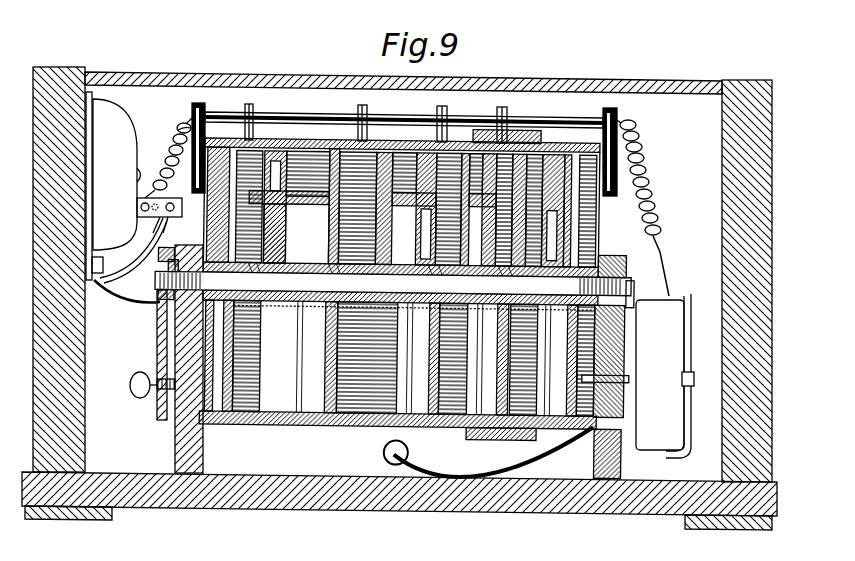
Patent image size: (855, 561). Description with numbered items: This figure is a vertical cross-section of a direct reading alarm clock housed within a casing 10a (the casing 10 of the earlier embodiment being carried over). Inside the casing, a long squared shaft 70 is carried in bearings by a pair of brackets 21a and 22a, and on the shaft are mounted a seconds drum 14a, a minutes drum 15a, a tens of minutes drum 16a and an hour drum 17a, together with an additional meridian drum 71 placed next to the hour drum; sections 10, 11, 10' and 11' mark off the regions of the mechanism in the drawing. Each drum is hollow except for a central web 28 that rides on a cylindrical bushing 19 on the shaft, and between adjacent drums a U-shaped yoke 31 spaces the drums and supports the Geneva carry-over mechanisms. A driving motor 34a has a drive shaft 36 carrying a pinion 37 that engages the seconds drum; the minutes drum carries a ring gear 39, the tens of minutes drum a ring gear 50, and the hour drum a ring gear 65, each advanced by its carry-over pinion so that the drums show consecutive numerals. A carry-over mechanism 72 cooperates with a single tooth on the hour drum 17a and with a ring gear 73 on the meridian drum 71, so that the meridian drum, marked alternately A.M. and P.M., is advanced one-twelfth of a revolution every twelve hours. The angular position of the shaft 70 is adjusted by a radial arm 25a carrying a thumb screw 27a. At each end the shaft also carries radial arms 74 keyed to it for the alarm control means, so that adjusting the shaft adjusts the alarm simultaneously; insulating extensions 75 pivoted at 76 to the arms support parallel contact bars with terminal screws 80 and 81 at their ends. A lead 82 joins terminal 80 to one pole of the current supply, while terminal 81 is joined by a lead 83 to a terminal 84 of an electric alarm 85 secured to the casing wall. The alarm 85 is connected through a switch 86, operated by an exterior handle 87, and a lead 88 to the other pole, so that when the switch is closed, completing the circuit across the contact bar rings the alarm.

The casing 10a is at (265, 78).
The casing 10 is at (404, 116).
The second section 11 is at (572, 100).
The first section lower 10' is at (284, 445).
The second section lower 11' is at (514, 454).
The seconds drum 14a is at (493, 452).
The minutes drum 15a is at (486, 438).
The tens of minutes drum 16a is at (437, 426).
The hour drum 17a is at (341, 426).
The cylindrical bushings 19 is at (312, 300).
The bracket 21a is at (625, 462).
The bracket 22a is at (178, 445).
The radial arm 25a is at (158, 353).
The thumb screw 27a is at (131, 386).
The central web 28 is at (327, 377).
The U-shaped yoke 31 is at (302, 318).
The driving motor 34a is at (670, 444).
The drive shaft 36 is at (628, 375).
The pinion 37 is at (590, 348).
The ring gear 39 is at (530, 368).
The ring gear 50 is at (458, 380).
The ring gear 65 is at (383, 449).
The squared shaft 70 is at (630, 270).
The meridian drum 71 is at (233, 426).
The carry-over mechanism 72 is at (296, 204).
The ring gear 73 is at (264, 360).
The radial arms 74 is at (204, 233).
The extensions 75 is at (190, 148).
The pivot 76 is at (643, 136).
The terminal screw 80 is at (620, 114).
The terminal screw 81 is at (190, 107).
The lead 82 is at (656, 200).
The lead 83 is at (180, 128).
The terminal 84 is at (140, 206).
The electric alarm 85 is at (135, 116).
The switch 86 is at (133, 250).
The handle 87 is at (128, 224).
The lead 88 is at (130, 304).